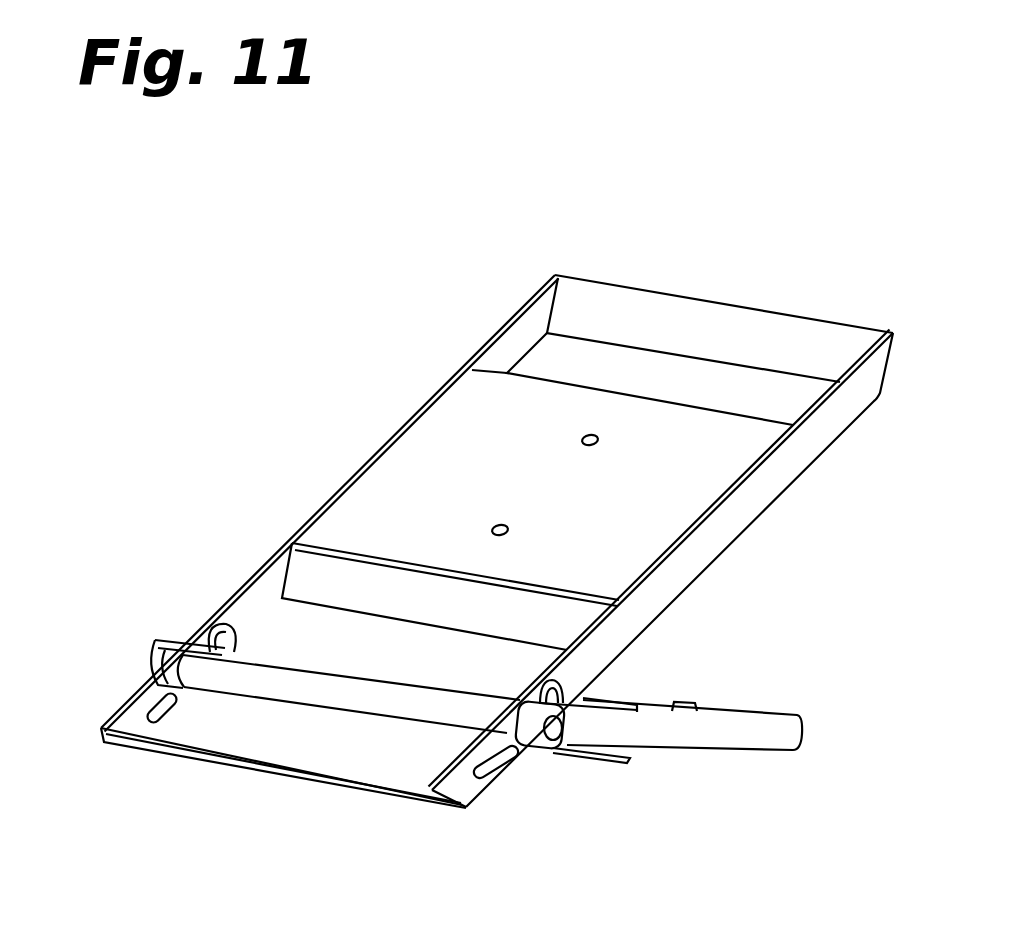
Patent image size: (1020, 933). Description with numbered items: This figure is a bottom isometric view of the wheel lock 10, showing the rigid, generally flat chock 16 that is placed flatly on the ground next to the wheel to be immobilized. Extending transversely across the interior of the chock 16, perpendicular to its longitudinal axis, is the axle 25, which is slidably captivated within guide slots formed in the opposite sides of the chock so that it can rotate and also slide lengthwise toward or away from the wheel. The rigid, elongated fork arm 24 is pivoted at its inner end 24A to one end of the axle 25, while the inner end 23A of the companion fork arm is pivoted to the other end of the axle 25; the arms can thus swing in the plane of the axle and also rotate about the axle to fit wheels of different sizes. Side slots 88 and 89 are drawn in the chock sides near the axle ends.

The wheel lock 10 is at (766, 288).
The chock 16 is at (370, 382).
The inner end of fork arm 23A is at (190, 640).
The fork arm 24 is at (693, 742).
The inner end of fork arm 24A is at (598, 742).
The axle 25 is at (372, 690).
The left slot 88 is at (143, 693).
The right slot 89 is at (505, 780).